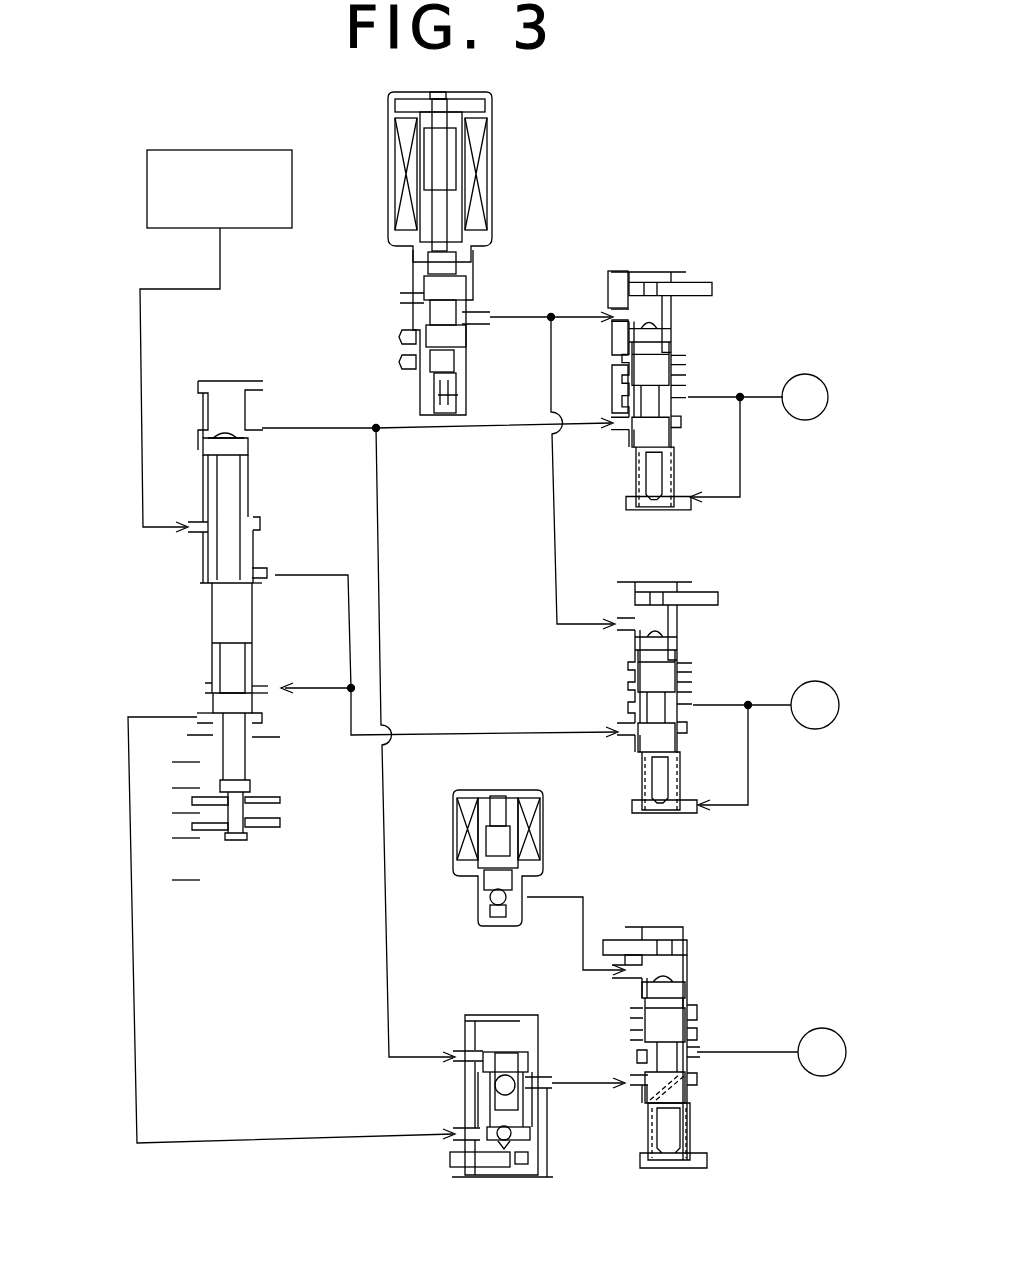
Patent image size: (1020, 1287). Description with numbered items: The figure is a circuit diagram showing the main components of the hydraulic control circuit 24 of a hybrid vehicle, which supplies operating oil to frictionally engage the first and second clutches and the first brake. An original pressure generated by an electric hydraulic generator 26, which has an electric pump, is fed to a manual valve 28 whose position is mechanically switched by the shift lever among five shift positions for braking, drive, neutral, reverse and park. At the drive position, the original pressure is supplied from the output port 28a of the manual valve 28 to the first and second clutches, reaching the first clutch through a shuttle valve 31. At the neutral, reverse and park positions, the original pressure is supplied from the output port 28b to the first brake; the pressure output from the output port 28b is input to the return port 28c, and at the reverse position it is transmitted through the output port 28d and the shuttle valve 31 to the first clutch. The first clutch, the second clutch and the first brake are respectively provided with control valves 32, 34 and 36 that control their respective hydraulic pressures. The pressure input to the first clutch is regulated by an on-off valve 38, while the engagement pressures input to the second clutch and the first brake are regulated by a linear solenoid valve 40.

The hydraulic control circuit 24 is at (695, 123).
The electric hydraulic generator 26 is at (258, 148).
The manual valve 28 is at (262, 366).
The output port 28a is at (258, 440).
The output port 28b is at (262, 580).
The return port 28c is at (268, 685).
The output port 28d is at (203, 713).
The shuttle valve 31 is at (490, 1005).
The control valve 32 is at (727, 944).
The control valve 34 is at (722, 264).
The control valve 36 is at (727, 571).
The on-off valve 38 is at (488, 784).
The linear solenoid valve 40 is at (530, 140).